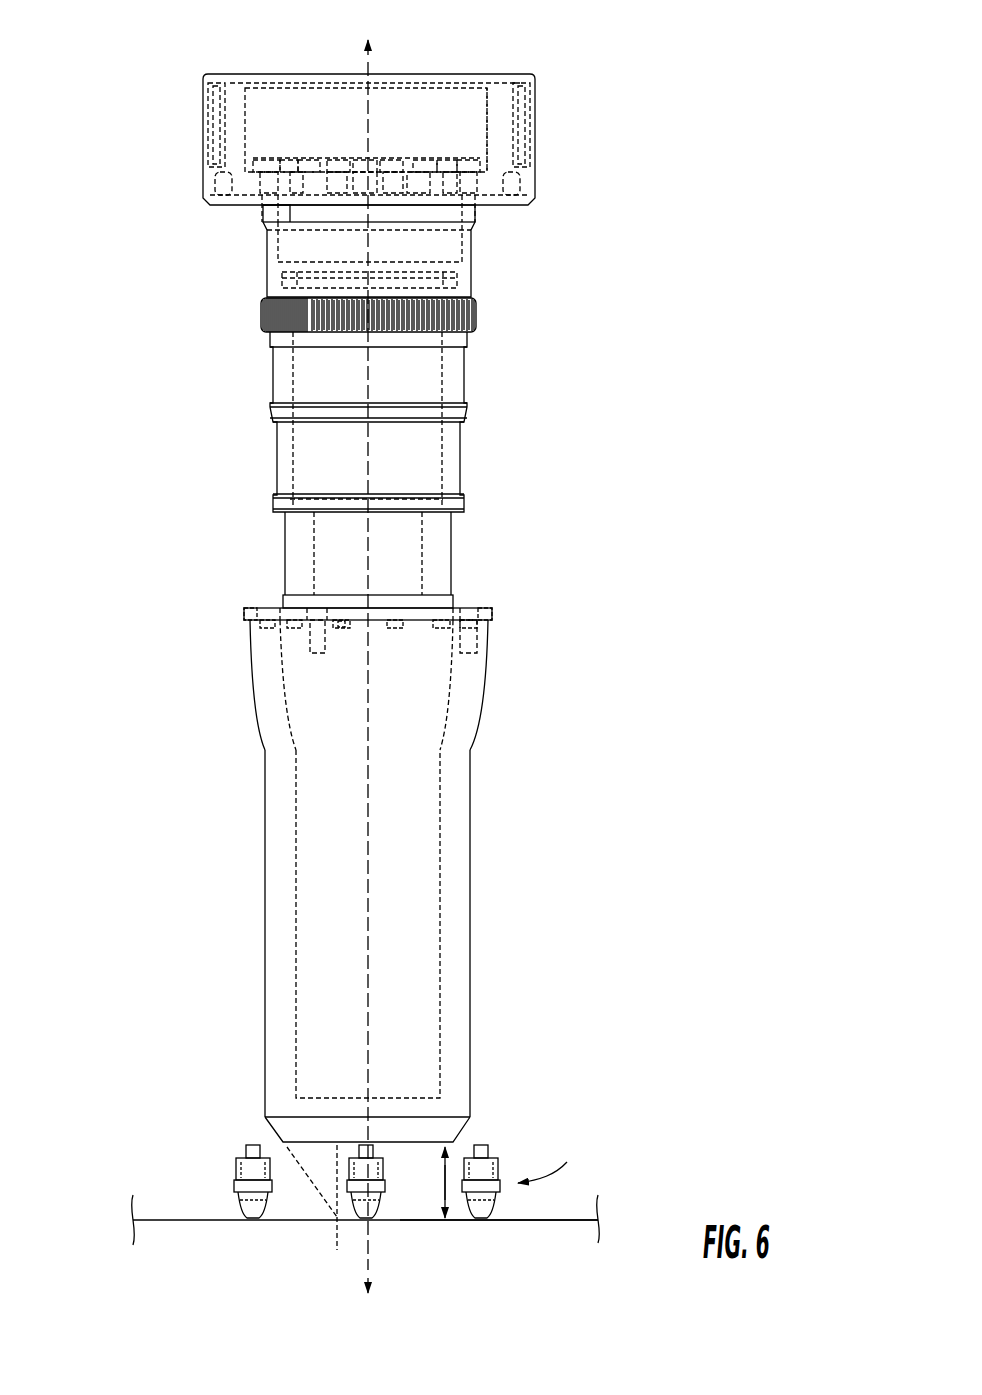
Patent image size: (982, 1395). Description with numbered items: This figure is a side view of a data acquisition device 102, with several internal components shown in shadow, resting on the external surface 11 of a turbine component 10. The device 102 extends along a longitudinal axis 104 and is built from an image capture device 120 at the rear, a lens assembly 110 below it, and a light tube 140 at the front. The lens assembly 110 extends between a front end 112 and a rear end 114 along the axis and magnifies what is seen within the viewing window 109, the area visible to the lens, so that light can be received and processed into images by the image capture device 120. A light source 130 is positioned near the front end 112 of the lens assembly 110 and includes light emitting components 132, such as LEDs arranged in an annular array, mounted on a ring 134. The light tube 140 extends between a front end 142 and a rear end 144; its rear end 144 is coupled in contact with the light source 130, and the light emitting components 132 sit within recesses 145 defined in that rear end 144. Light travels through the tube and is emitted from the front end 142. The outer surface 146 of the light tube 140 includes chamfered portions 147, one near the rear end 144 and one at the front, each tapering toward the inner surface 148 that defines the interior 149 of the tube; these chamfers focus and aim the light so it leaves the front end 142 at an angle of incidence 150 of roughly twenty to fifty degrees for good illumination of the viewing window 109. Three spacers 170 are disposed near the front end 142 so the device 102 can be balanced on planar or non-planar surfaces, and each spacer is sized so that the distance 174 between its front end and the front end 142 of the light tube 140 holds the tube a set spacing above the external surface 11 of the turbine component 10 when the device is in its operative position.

The turbine component 10 is at (545, 1255).
The external surface 11 is at (582, 1218).
The data acquisition device 102 is at (600, 238).
The longitudinal axis 104 is at (368, 62).
The viewing window 109 is at (402, 1167).
The lens assembly 110 is at (237, 455).
The front end of lens assembly 112 is at (432, 617).
The rear end of lens assembly 114 is at (262, 207).
The image capture device 120 is at (490, 165).
The light source 130 is at (262, 600).
The light emitting components 132 is at (296, 628).
The ring 134 is at (246, 612).
The light tube 140 is at (233, 857).
The front end of light tube 142 is at (296, 1147).
The rear end of light tube 144 is at (487, 622).
The recesses 145 is at (420, 628).
The outer surface 146 is at (273, 892).
The chamfered portion 147 is at (480, 688).
The inner surface 148 is at (297, 935).
The interior 149 is at (414, 874).
The angle of incidence 150 is at (333, 1152).
The spacers 170 is at (217, 1183).
The distance 174 is at (445, 1180).